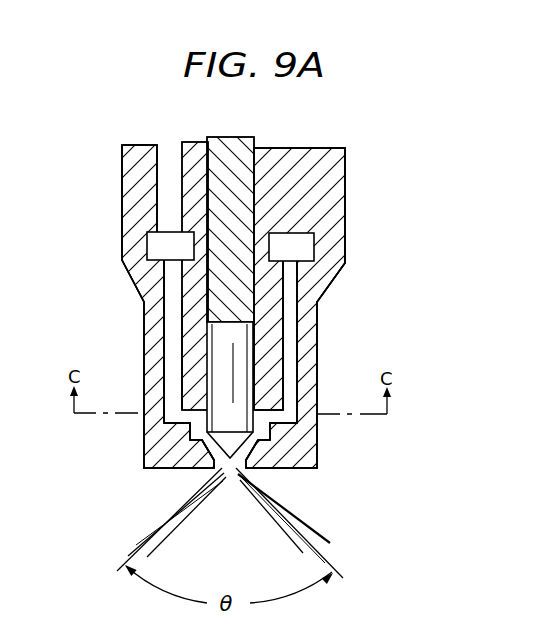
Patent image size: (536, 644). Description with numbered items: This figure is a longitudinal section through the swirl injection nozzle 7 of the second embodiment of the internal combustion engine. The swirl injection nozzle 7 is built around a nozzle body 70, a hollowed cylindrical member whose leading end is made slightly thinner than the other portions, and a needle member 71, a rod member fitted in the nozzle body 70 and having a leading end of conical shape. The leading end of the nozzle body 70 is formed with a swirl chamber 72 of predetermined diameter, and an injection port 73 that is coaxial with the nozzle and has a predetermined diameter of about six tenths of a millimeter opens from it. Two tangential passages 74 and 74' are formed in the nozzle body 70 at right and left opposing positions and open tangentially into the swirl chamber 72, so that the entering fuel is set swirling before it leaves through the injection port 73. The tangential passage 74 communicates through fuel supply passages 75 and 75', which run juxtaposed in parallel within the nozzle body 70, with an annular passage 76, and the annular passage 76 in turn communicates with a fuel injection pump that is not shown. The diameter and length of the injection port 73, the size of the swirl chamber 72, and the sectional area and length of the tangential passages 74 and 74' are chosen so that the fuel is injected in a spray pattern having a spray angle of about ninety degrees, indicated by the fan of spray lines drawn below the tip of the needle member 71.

The swirl injection nozzle 7 is at (110, 447).
The nozzle body 70 is at (323, 197).
The needle valve 71 is at (235, 147).
The swirl chamber 72 is at (262, 432).
The injection port 73 is at (233, 458).
The tangential passage 74 is at (311, 411).
The tangential passage 74' is at (148, 409).
The fuel supply passage 75 is at (324, 355).
The fuel supply passage 75' is at (135, 355).
The annular passage 76 is at (162, 243).